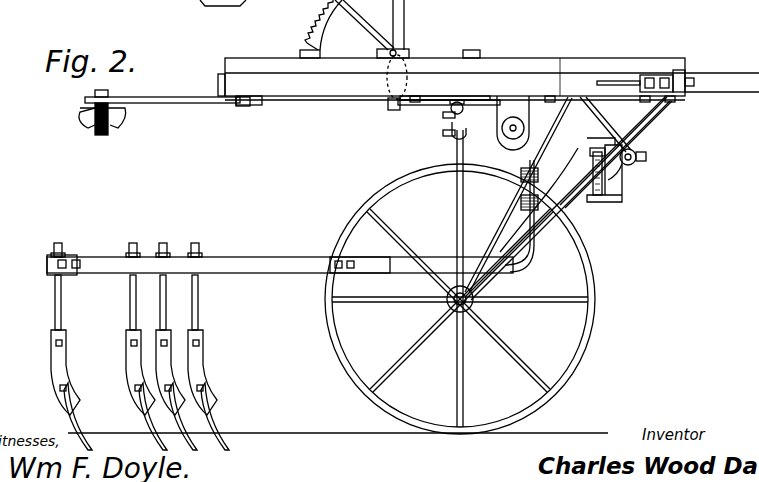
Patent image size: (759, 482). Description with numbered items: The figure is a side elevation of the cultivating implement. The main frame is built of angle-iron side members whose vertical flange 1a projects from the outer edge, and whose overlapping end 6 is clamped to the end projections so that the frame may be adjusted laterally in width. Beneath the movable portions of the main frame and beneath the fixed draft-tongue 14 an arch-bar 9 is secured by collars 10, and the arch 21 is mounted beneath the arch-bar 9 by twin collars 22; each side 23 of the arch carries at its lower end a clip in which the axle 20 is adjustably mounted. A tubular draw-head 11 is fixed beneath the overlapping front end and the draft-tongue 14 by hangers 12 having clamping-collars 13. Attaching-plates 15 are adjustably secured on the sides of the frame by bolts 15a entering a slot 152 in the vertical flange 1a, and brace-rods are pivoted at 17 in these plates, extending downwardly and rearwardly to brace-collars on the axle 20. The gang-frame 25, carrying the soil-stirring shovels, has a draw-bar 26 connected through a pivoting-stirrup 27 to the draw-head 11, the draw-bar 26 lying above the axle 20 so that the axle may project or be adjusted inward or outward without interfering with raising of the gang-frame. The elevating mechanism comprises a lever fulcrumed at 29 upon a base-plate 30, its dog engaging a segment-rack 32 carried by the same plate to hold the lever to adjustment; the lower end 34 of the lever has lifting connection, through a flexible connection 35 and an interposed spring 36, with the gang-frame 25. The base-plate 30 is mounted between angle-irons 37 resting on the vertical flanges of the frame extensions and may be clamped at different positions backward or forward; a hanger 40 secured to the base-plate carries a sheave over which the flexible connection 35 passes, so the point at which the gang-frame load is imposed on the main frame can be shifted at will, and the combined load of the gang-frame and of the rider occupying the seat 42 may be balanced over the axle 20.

The vertical flange 1a is at (517, 101).
The overlapping end 6 is at (538, 160).
The arch-bar 9 is at (448, 118).
The collar 10 is at (440, 105).
The draw-head 11 is at (630, 166).
The hanger 12 is at (645, 122).
The clamping-collar 13 is at (647, 157).
The draft-tongue 14 is at (722, 78).
The attaching-plate 15 is at (657, 76).
The bolt 15a is at (678, 82).
The slot 152 is at (615, 81).
The pivot 17 is at (614, 124).
The axle 20 is at (458, 305).
The arch 21 is at (466, 132).
The twin collar 22 is at (468, 113).
The side of the arch 23 is at (512, 142).
The gang-frame 25 is at (222, 258).
The draw-bar 26 is at (536, 245).
The pivoting-stirrup 27 is at (612, 200).
The fulcrum 29 is at (408, 50).
The base-plate 30 is at (496, 60).
The segment-rack 32 is at (310, 29).
The lower end of lever 34 is at (393, 110).
The flexible connection 35 is at (405, 106).
The interposed spring 36 is at (556, 196).
The angle-iron 37 is at (558, 58).
The hanger 40 is at (518, 195).
The seat 42 is at (122, 128).